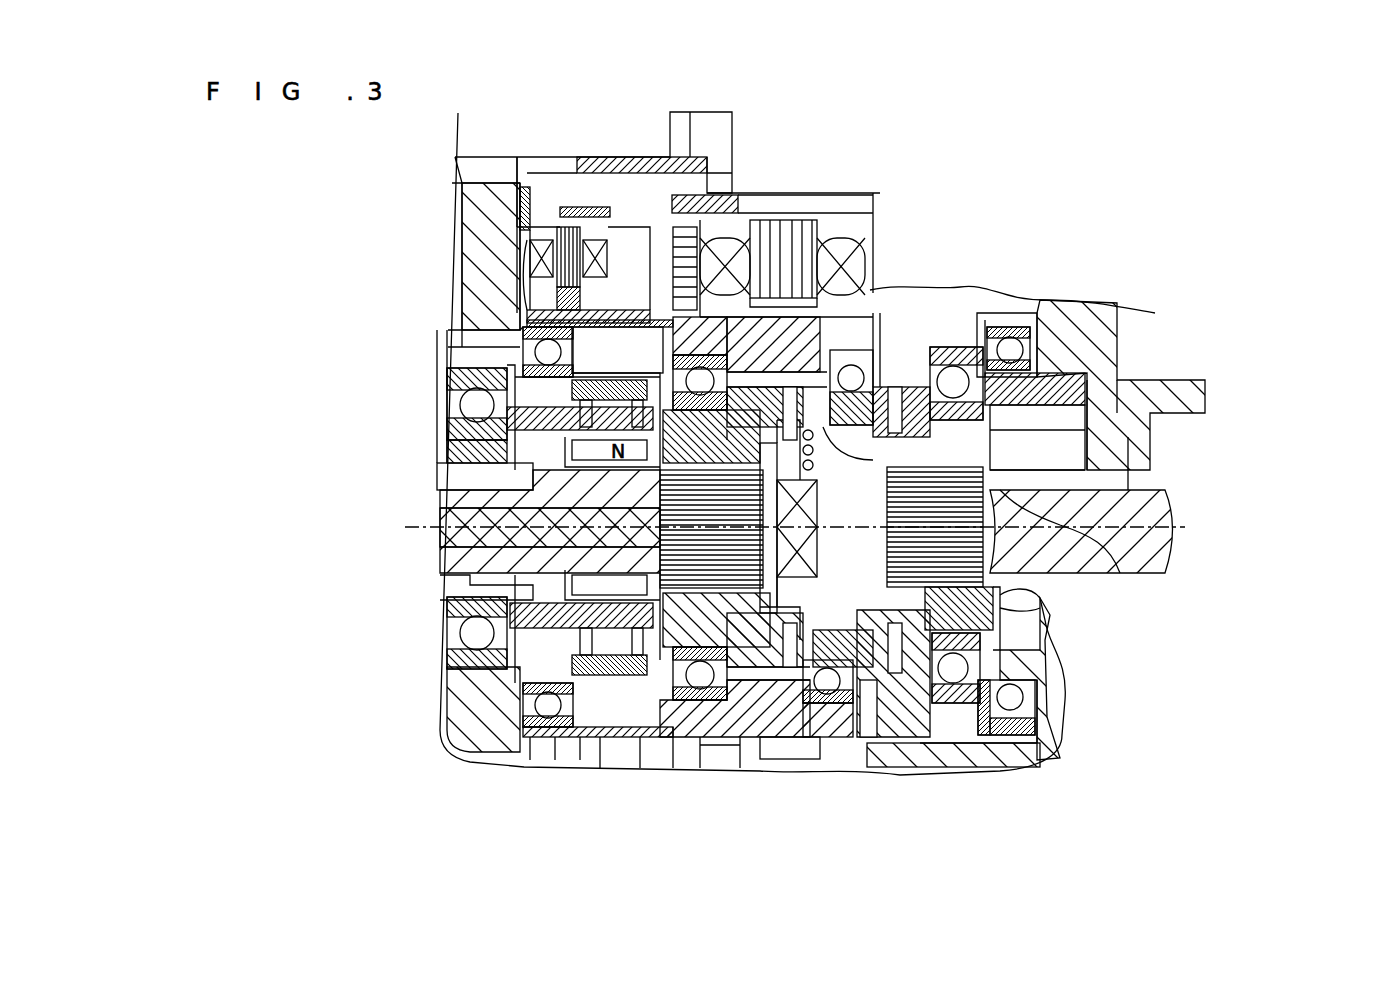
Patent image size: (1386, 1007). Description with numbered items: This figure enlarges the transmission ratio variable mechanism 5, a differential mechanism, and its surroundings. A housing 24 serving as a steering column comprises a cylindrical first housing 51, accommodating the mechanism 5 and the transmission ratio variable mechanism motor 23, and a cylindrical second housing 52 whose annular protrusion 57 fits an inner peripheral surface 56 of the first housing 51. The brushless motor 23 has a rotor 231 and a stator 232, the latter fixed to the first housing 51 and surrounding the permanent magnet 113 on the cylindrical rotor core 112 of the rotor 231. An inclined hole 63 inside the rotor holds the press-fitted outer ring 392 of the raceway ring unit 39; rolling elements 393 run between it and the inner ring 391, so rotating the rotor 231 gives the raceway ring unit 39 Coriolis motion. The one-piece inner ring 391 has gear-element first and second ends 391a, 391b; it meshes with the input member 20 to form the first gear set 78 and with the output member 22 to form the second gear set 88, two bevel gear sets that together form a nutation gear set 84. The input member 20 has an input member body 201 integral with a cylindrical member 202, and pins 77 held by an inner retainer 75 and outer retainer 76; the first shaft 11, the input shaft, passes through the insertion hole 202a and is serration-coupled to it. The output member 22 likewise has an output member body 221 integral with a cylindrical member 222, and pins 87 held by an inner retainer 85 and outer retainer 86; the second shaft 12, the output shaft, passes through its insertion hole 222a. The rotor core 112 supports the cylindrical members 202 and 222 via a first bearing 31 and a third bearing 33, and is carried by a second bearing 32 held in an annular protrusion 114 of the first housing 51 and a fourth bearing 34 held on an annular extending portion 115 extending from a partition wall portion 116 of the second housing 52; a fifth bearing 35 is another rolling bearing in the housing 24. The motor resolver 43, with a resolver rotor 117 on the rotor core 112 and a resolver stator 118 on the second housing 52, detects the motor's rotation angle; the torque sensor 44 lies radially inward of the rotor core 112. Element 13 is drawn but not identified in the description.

The transmission ratio variable mechanism 5 is at (953, 340).
The first shaft 11 is at (1168, 495).
The second shaft 12 is at (505, 490).
The seal member 13 is at (450, 455).
The input member 20 is at (1060, 590).
The output member 22 is at (710, 705).
The transmission ratio variable mechanism motor 23 is at (905, 100).
The housing 24 is at (1033, 293).
The first bearing 31 is at (962, 352).
The second bearing 32 is at (1030, 358).
The third bearing 33 is at (757, 307).
The fourth bearing 34 is at (462, 305).
The fifth bearing 35 is at (458, 370).
The raceway ring unit 39 is at (1047, 129).
The motor resolver 43 is at (605, 105).
The torque sensor 44 is at (462, 412).
The first housing 51 is at (1000, 300).
The second housing 52 is at (712, 250).
The inner peripheral surface 56 is at (714, 112).
The annular protrusion 57 is at (706, 200).
The inclined hole 63 is at (867, 290).
The inner retainer 75 is at (828, 520).
The outer retainer 76 is at (900, 720).
The pins 77 is at (908, 730).
The first gear set 78 is at (922, 347).
The nutation gear set 84 is at (870, 740).
The inner retainer 85 is at (800, 582).
The outer retainer 86 is at (782, 670).
The pins 87 is at (748, 670).
The second gear set 88 is at (836, 640).
The rotor core 112 is at (655, 300).
The permanent magnet 113 is at (748, 330).
The annular protrusion 114 is at (1040, 335).
The annular extending portion 115 is at (592, 378).
The partition wall portion 116 is at (458, 280).
The resolver rotor 117 is at (540, 240).
The resolver stator 118 is at (568, 228).
The input member body 201 is at (985, 650).
The cylindrical member 202 is at (993, 613).
The insertion hole 202a is at (1005, 606).
The output member body 221 is at (663, 700).
The cylindrical member 222 is at (627, 737).
The insertion hole 222a is at (585, 570).
The rotor 231 is at (832, 290).
The stator 232 is at (833, 262).
The inner ring 391 is at (905, 310).
The first end 391a is at (987, 437).
The second end 391b is at (982, 463).
The outer ring 392 is at (865, 350).
The rolling elements 393 is at (875, 353).